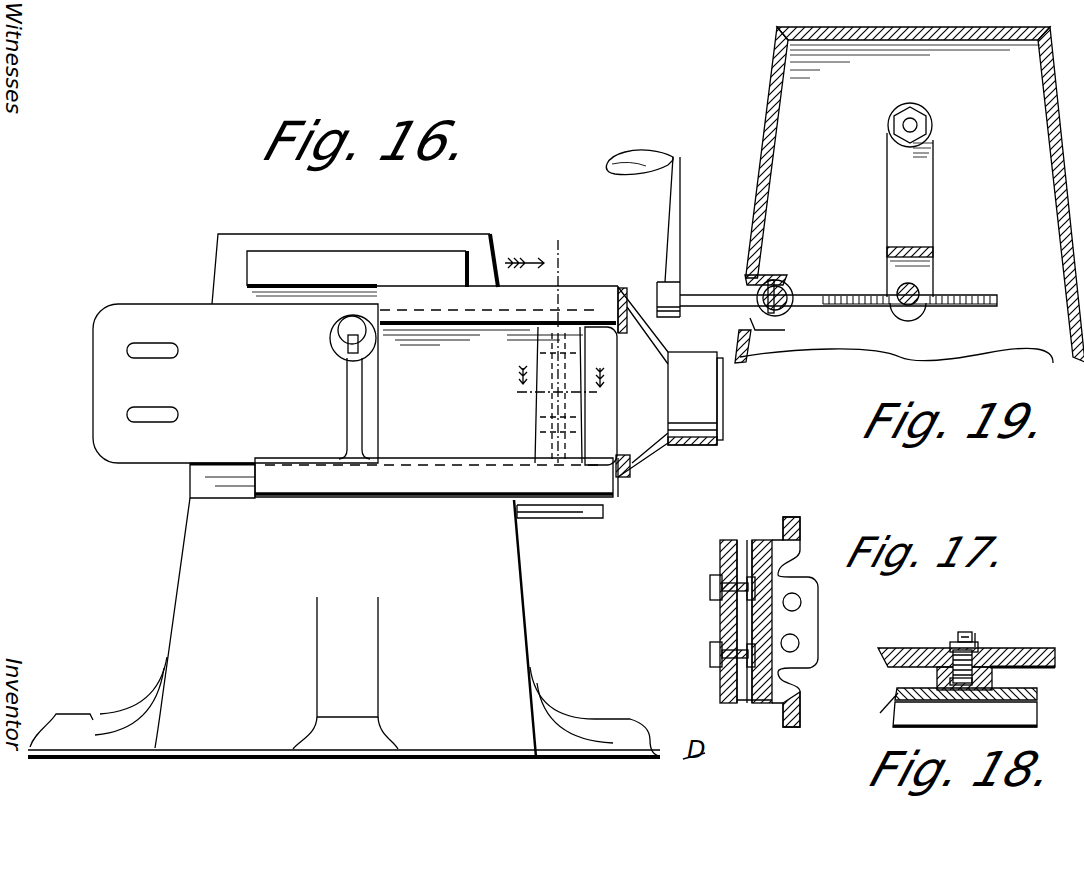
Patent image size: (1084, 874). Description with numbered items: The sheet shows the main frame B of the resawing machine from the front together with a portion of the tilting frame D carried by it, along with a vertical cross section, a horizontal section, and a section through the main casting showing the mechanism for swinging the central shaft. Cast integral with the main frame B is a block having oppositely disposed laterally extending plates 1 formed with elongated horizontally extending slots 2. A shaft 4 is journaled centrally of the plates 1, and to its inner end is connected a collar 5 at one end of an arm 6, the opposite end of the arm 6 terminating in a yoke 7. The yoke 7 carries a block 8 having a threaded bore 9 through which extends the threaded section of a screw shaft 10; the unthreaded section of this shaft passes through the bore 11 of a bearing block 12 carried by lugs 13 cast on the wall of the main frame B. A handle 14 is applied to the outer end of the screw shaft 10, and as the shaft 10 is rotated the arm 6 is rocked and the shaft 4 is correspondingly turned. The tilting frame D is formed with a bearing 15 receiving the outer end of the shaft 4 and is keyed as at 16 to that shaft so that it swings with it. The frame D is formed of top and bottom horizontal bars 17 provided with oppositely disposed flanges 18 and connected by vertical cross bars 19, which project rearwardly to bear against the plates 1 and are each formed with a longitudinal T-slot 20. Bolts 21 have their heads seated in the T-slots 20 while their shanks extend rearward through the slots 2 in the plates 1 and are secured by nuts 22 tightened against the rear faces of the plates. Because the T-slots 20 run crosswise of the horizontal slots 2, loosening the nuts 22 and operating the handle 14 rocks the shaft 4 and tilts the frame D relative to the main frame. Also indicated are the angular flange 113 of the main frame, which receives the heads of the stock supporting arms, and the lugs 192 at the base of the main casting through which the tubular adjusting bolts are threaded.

In FIG. 16, the laterally extending plates 1 is at (133, 508).
In FIG. 17, the laterally extending plates 1 is at (722, 553).
In FIG. 18, the laterally extending plates 1 is at (922, 648).
In FIG. 16, the elongated horizontally extending slots 2 is at (178, 350).
In FIG. 19, the shaft 4 is at (927, 122).
In FIG. 16, the collar 5 is at (338, 332).
In FIG. 19, the collar 5 is at (890, 135).
In FIG. 19, the arm 6 is at (928, 195).
In FIG. 19, the yoke 7 is at (928, 270).
In FIG. 19, the block 8 is at (918, 293).
In FIG. 19, the threaded bore 9 is at (925, 315).
In FIG. 16, the screw shaft 10 is at (603, 513).
In FIG. 19, the screw shaft 10 is at (867, 308).
In FIG. 19, the bore 11 is at (785, 283).
In FIG. 19, the bearing block 12 is at (781, 317).
In FIG. 19, the lugs 13 is at (760, 283).
In FIG. 19, the handle 14 is at (678, 283).
In FIG. 16, the bearing 15 is at (373, 352).
In FIG. 16, the key 16 is at (342, 353).
In FIG. 16, the horizontal bars 17 is at (557, 523).
In FIG. 17, the horizontal bars 17 is at (773, 540).
In FIG. 18, the horizontal bars 17 is at (1035, 703).
In FIG. 16, the flanges 18 is at (422, 287).
In FIG. 17, the flanges 18 is at (800, 537).
In FIG. 18, the flanges 18 is at (1022, 717).
In FIG. 16, the vertical cross bars 19 is at (543, 438).
In FIG. 17, the vertical cross bars 19 is at (747, 680).
In FIG. 18, the vertical cross bars 19 is at (993, 677).
In FIG. 17, the T-slot 20 is at (750, 617).
In FIG. 18, the T-slot 20 is at (973, 677).
In FIG. 17, the bolts 21 is at (723, 578).
In FIG. 18, the bolts 21 is at (968, 657).
In FIG. 17, the nuts 22 is at (712, 597).
In FIG. 18, the nuts 22 is at (952, 643).
In FIG. 16, the angular flange 113 is at (247, 290).
In FIG. 16, the lugs 192 is at (92, 723).
In FIG. 16, the main frame B is at (193, 575).
In FIG. 19, the main frame B is at (763, 143).
In FIG. 16, the tilting frame D is at (387, 482).
In FIG. 18, the tilting frame D is at (869, 721).